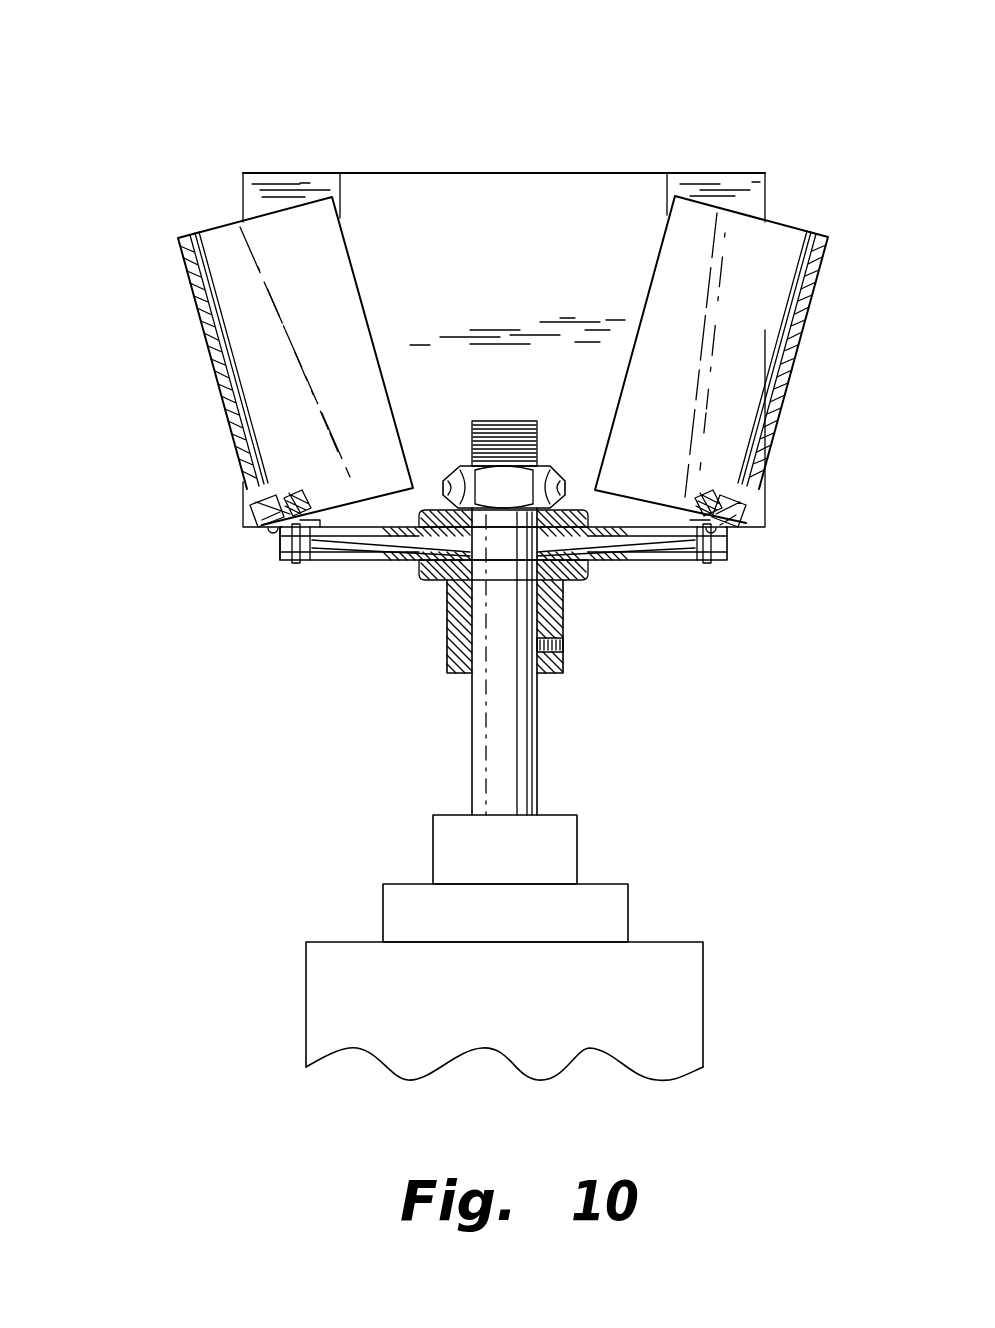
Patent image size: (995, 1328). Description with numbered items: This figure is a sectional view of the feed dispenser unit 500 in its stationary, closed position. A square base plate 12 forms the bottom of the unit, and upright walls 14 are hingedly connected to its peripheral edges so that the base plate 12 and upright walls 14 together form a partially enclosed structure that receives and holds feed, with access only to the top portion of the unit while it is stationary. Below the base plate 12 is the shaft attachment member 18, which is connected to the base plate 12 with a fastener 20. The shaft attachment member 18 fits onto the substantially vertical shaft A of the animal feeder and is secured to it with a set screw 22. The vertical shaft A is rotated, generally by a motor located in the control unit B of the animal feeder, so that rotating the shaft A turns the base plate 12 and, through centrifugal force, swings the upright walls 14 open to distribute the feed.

The feed dispenser unit 500 is at (103, 79).
The upright walls 14 is at (523, 244).
The base plate 12 is at (665, 560).
The fastener 20 is at (555, 476).
The shaft attachment member 18 is at (436, 510).
The set screw 22 is at (565, 646).
The vertical shaft A is at (473, 735).
The control unit B is at (705, 998).